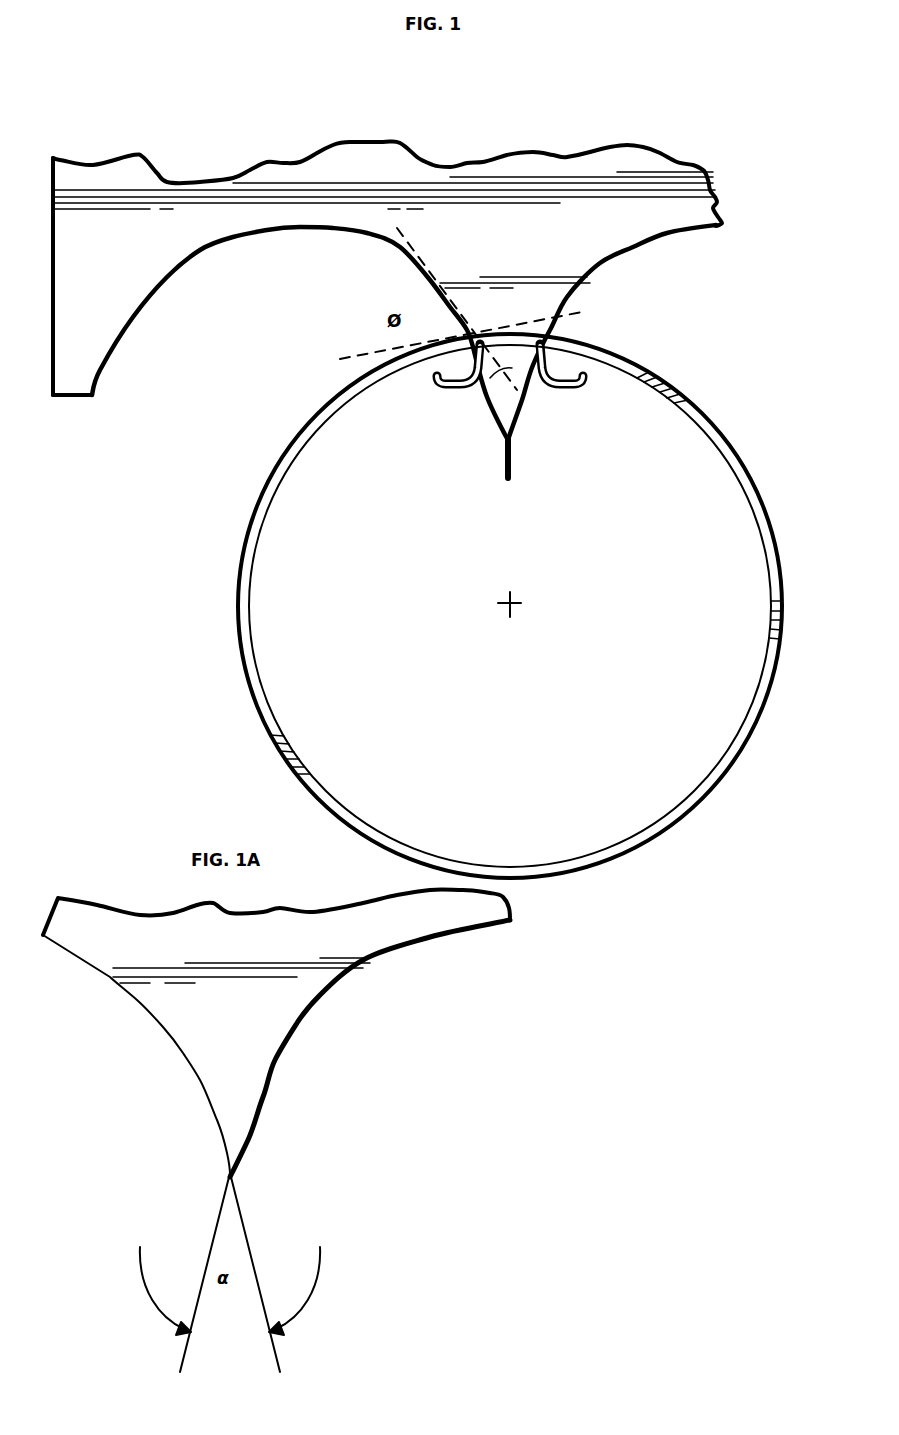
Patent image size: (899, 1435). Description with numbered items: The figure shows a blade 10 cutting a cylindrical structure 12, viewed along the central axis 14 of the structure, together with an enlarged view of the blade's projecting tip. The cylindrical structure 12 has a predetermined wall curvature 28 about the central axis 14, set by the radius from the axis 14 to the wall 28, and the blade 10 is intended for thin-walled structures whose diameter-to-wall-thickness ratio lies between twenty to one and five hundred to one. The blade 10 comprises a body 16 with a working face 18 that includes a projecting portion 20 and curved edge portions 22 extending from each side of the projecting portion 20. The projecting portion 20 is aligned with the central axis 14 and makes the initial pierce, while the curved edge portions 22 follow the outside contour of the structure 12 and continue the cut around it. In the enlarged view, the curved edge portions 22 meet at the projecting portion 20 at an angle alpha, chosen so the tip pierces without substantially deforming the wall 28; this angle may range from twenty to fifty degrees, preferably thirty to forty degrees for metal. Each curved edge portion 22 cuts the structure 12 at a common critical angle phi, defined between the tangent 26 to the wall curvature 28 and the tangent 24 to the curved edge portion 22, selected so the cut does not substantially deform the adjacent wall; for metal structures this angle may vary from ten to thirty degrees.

In FIG. 1, the blade 10 is at (346, 136).
In FIG. 1, the cylindrical structure 12 is at (754, 484).
In FIG. 1, the central axis 14 is at (506, 608).
In FIG. 1, the body 16 is at (93, 249).
In FIG. 1, the working face 18 is at (82, 398).
In FIG. 1, the projecting portion 20 is at (490, 386).
In FIG. 1A, the projecting portion 20 is at (237, 1120).
In FIG. 1, the curved edge portions 22 is at (173, 277).
In FIG. 1A, the curved edge portions 22 is at (134, 998).
In FIG. 1, the tangent to the curved edge portion 24 is at (418, 257).
In FIG. 1, the tangent to the wall curvature 26 is at (360, 354).
In FIG. 1, the wall curvature 28 is at (708, 435).